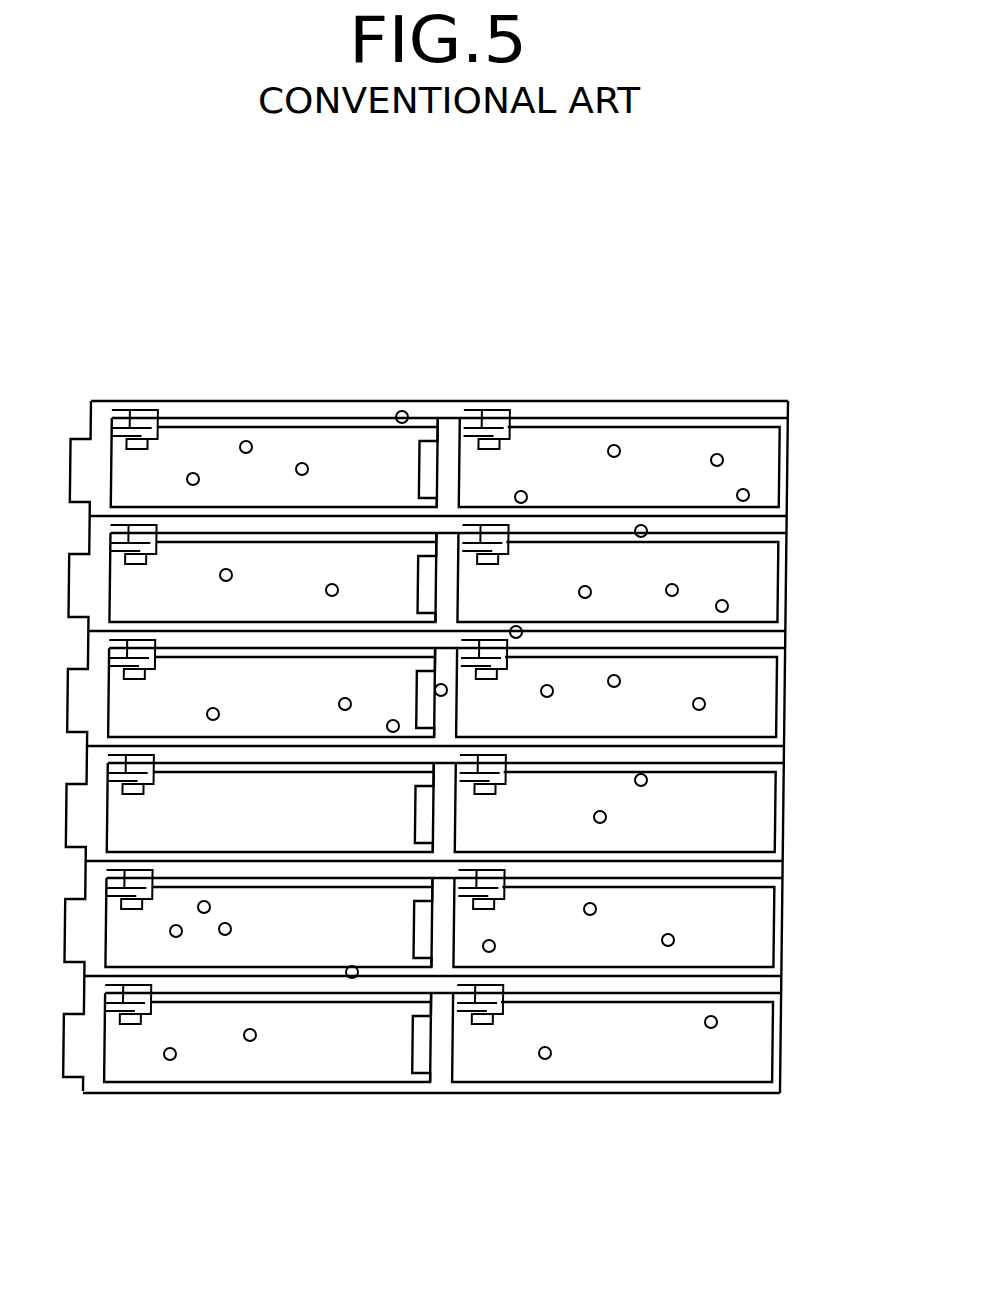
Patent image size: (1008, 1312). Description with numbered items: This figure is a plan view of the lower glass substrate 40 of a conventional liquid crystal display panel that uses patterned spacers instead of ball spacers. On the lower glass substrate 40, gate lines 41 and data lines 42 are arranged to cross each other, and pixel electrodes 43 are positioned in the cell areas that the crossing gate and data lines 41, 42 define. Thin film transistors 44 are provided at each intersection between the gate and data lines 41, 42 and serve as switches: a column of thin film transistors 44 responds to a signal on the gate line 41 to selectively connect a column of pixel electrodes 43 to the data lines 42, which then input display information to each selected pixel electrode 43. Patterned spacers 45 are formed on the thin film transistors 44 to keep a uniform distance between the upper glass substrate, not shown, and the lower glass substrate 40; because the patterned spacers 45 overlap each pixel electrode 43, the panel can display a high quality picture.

The lower glass substrate 40 is at (395, 1200).
The gate line 41 is at (442, 1092).
The data line 42 is at (760, 990).
The pixel electrode 43 is at (615, 1072).
The thin film transistor 44 is at (503, 560).
The patterned spacer 45 is at (483, 412).